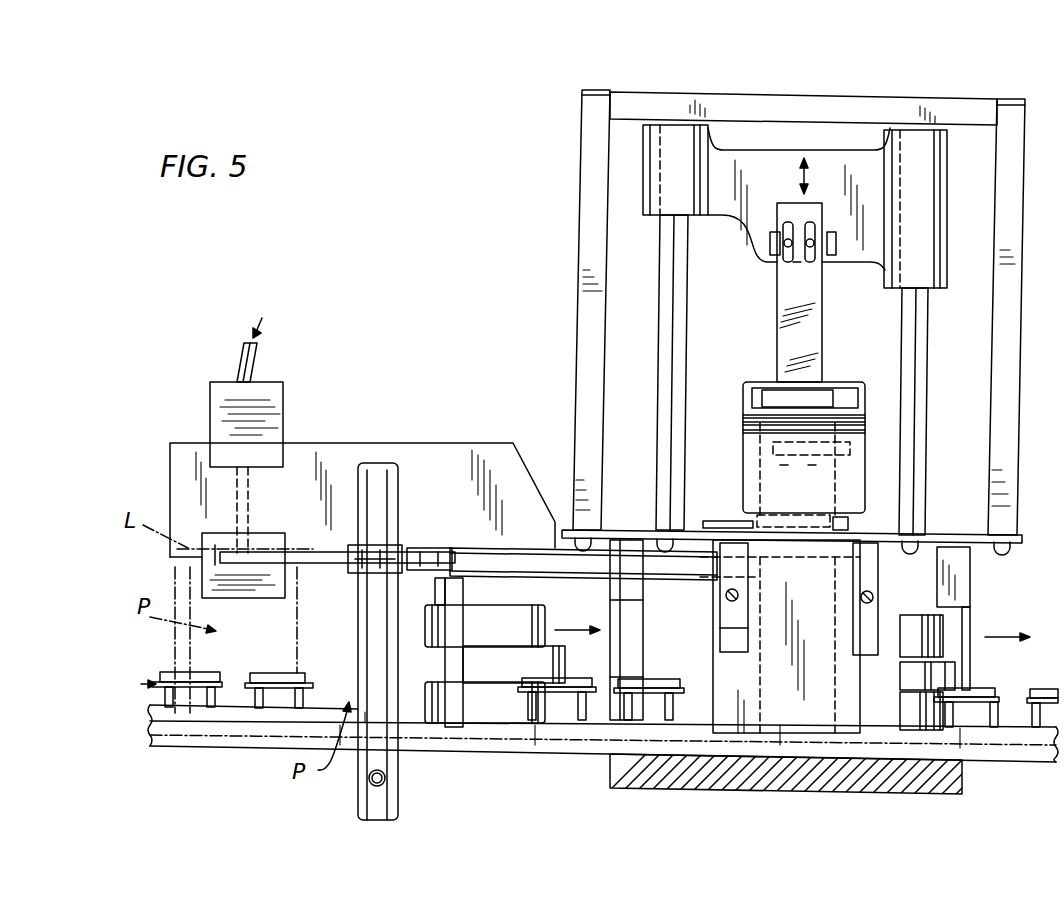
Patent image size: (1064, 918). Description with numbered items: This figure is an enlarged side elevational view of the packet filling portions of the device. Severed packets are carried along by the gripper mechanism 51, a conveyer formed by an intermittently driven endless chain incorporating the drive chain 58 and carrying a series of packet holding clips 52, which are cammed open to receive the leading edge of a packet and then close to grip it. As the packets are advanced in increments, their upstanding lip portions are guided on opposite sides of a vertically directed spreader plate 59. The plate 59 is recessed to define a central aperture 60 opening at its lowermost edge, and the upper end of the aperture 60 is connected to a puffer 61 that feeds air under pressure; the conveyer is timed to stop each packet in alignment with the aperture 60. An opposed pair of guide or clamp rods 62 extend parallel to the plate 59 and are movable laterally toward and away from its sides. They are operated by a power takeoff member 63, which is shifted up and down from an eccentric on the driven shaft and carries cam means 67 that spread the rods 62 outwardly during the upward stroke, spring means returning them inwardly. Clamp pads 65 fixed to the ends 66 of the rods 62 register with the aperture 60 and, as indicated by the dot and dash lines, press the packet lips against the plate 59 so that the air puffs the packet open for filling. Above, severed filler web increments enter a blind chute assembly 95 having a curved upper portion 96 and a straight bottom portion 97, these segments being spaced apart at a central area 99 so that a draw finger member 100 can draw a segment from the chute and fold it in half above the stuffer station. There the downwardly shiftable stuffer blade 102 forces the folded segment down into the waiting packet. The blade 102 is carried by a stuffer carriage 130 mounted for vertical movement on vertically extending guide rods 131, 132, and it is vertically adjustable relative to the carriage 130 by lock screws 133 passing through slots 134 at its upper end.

The stuffer carriage 130 is at (838, 152).
The guide rod 131 is at (667, 300).
The guide rod 132 is at (928, 330).
The lock screws 133 is at (787, 243).
The slots 134 is at (790, 225).
The stuffer blade 102 is at (820, 348).
The blind chute assembly 95 is at (732, 447).
The curved upper portion 96 is at (850, 455).
The central area 99 is at (810, 517).
The draw finger member 100 is at (722, 521).
The straight bottom portion 97 is at (800, 670).
The gripper mechanism 51 is at (158, 672).
The drive chain 58 is at (1044, 688).
The packet holding clips 52 is at (527, 600).
The spreader plate 59 is at (303, 445).
The central aperture 60 is at (250, 481).
The puffer 61 is at (238, 355).
The guide or clamp rods 62 is at (527, 548).
The power takeoff member 63 is at (398, 800).
The clamp pads 65 is at (275, 535).
The ends of the rods 66 is at (225, 552).
The cam means 67 is at (362, 545).